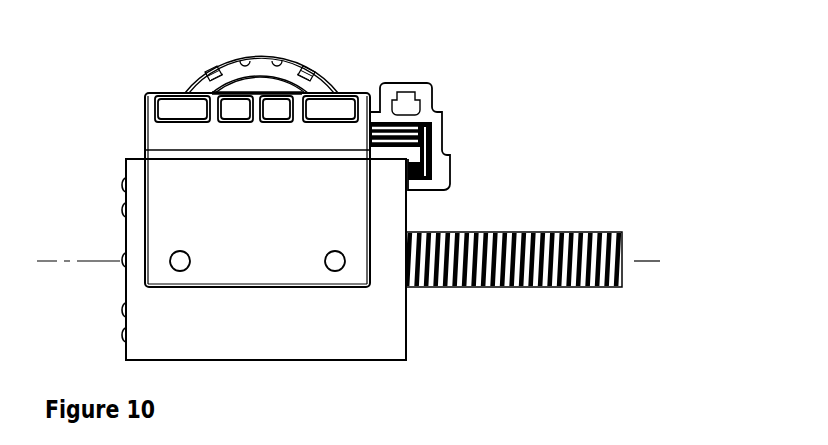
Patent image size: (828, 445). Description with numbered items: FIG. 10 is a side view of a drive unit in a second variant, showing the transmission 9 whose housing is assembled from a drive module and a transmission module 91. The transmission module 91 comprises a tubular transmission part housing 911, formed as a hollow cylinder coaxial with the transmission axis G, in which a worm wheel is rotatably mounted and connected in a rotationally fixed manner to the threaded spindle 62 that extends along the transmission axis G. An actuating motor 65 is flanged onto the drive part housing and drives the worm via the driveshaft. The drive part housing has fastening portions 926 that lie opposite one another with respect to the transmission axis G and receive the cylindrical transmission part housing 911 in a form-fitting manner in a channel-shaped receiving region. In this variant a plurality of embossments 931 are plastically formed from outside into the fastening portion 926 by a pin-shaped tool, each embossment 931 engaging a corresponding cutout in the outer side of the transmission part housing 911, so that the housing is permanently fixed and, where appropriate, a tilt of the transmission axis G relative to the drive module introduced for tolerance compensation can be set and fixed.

The transmission 9 is at (506, 71).
The transmission module 91 is at (424, 355).
The transmission part housing 911 is at (367, 333).
The threaded spindle 62 is at (182, 220).
The actuating motor 65 is at (260, 73).
The fastening portion 926 is at (160, 270).
The embossment 931 is at (181, 270).
The transmission axis G is at (651, 258).